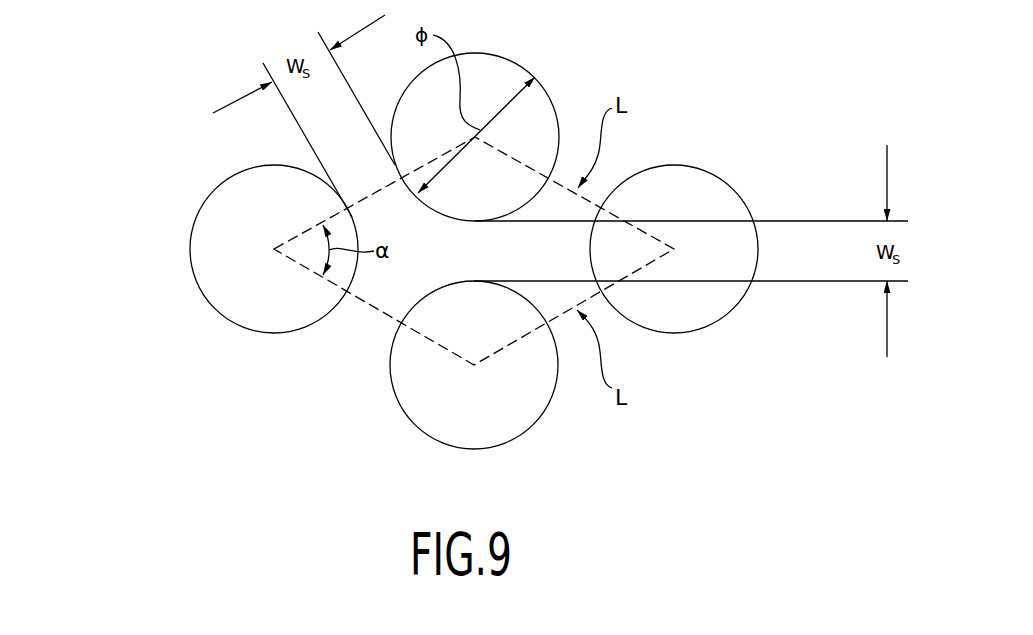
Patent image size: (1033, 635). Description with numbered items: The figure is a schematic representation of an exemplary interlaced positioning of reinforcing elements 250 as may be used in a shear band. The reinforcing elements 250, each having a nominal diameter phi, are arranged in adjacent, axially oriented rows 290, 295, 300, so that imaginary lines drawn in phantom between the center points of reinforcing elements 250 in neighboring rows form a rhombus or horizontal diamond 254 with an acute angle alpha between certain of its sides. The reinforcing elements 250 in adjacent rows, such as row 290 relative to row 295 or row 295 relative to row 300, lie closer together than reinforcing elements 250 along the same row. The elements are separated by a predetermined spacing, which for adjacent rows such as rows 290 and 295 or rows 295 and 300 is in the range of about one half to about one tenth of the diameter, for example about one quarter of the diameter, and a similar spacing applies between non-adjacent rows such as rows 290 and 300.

The reinforcing element 250 is at (725, 183).
The rhombus or horizontal diamond 254 is at (373, 312).
The axially oriented row 290 is at (158, 137).
The axially oriented row 295 is at (158, 250).
The axially oriented row 300 is at (158, 368).